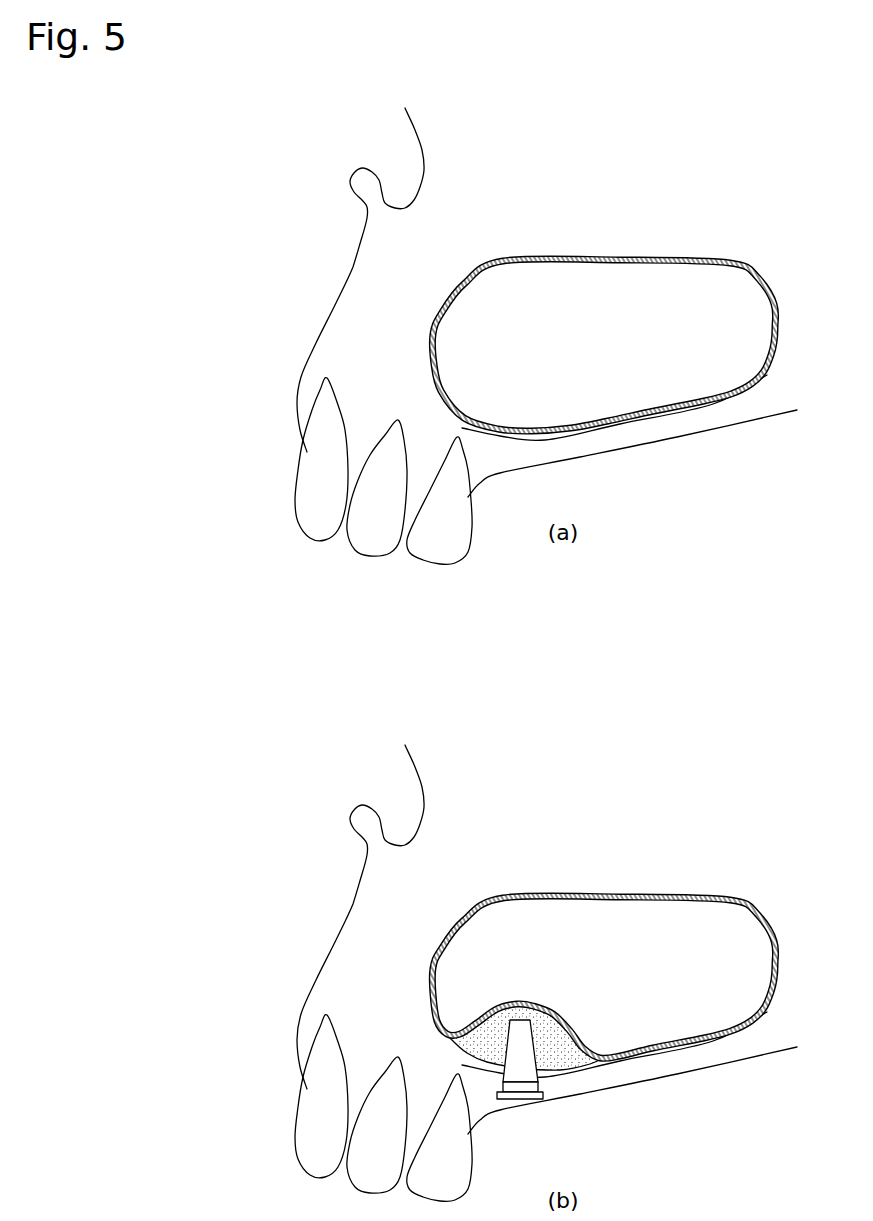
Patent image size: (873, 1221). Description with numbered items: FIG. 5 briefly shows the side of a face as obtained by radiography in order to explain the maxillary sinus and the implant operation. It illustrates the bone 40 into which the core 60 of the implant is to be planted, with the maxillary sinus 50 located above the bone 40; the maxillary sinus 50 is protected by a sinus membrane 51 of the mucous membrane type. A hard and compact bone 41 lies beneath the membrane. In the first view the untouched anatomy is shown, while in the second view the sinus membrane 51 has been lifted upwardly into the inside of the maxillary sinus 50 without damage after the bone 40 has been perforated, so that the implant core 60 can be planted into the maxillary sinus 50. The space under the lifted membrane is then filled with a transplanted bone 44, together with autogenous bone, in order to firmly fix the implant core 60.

The bone 40 is at (678, 438).
The hard and compact bone 41 is at (717, 404).
The transplanted bone 44 is at (567, 1033).
The maxillary sinus 50 is at (602, 275).
The sinus membrane 51 is at (517, 426).
The implant core 60 is at (517, 1090).